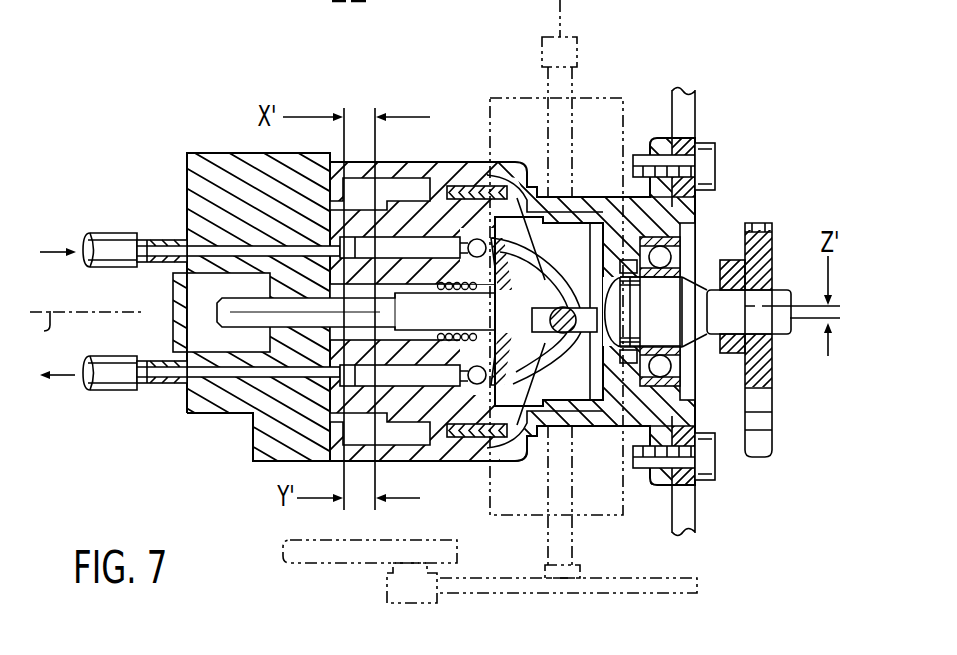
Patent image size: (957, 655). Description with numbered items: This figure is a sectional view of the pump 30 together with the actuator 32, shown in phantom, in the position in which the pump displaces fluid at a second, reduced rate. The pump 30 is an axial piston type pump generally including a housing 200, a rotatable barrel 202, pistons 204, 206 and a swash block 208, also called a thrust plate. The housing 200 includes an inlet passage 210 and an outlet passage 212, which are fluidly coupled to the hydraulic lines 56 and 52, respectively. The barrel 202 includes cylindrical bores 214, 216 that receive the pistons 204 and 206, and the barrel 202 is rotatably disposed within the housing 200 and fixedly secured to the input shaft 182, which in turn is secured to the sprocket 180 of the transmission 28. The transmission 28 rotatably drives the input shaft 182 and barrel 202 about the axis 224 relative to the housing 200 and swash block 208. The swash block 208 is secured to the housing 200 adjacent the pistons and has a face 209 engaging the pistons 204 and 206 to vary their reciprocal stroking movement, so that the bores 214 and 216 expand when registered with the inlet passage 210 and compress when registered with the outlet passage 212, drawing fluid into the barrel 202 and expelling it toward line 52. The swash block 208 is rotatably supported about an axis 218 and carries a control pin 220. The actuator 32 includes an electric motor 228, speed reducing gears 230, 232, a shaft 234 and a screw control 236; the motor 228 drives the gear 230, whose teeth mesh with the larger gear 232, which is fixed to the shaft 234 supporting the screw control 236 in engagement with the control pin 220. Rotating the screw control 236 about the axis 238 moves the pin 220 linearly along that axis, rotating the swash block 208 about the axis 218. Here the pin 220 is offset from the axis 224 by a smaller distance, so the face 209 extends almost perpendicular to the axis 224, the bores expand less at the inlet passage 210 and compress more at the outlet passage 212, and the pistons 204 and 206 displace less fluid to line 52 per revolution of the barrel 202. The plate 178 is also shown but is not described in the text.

The pump 30 is at (110, 144).
The hydraulic line 56 is at (108, 236).
The hydraulic line 52 is at (119, 390).
The axis 224 is at (80, 338).
The inlet passage 210 is at (245, 248).
The cylindrical bore 216 is at (298, 236).
The outlet passage 212 is at (254, 384).
The cylindrical bore 214 is at (318, 396).
The piston 206 is at (409, 246).
The piston 204 is at (407, 380).
The face 209 is at (458, 254).
The screw control 236 is at (574, 189).
The axis 218 is at (541, 282).
The control pin 220 is at (562, 345).
The housing 200 is at (688, 227).
The barrel 202 is at (420, 455).
The swash block 208 is at (523, 452).
The input shaft 182 is at (722, 297).
The sprocket 180 is at (770, 266).
The plate 178 is at (772, 397).
The transmission 28 is at (783, 438).
The axis 238 is at (562, 17).
The shaft 234 is at (578, 545).
The speed reducing gear 232 is at (672, 597).
The speed reducing gear 230 is at (432, 601).
The electric motor 228 is at (300, 566).
The actuator 32 is at (346, 574).